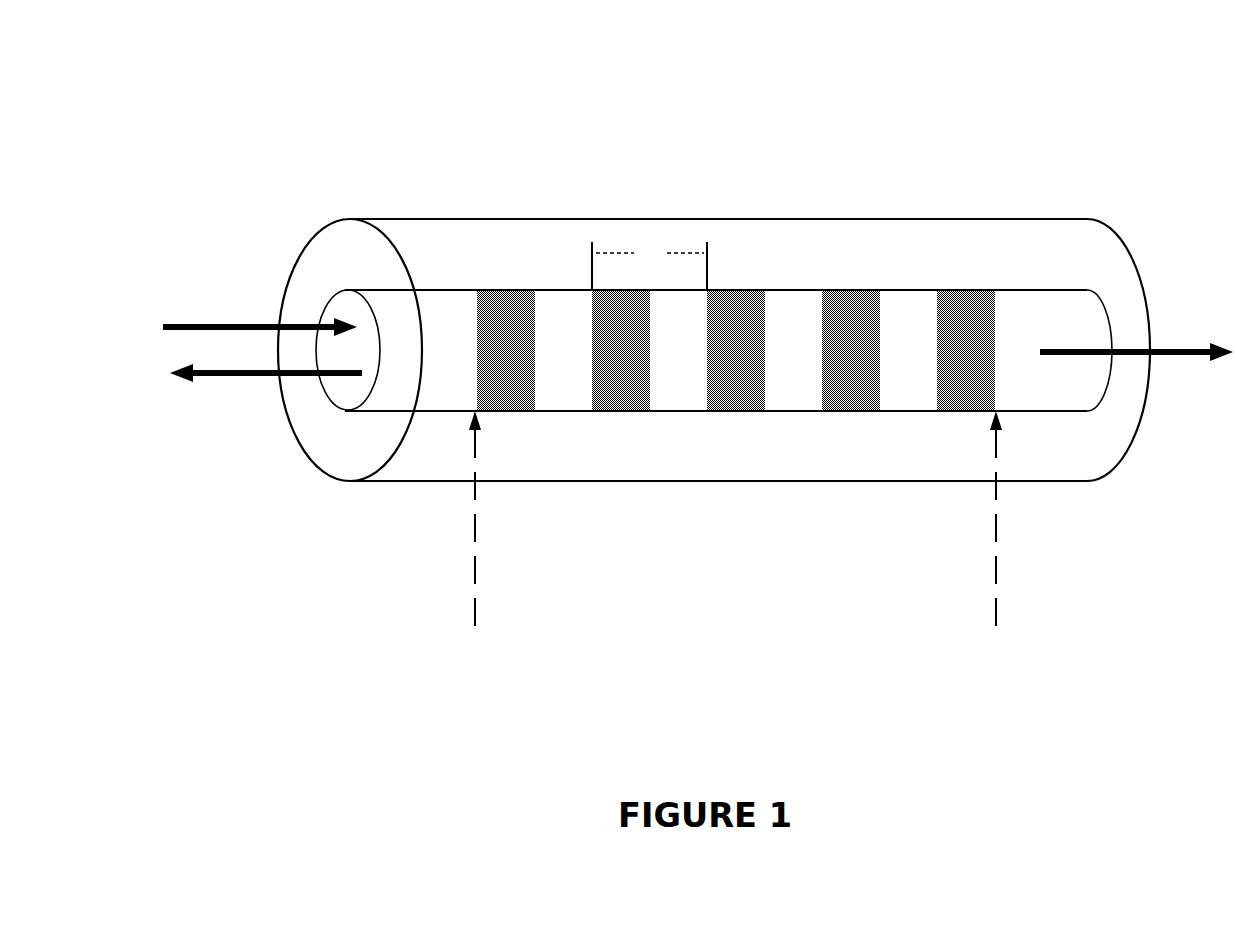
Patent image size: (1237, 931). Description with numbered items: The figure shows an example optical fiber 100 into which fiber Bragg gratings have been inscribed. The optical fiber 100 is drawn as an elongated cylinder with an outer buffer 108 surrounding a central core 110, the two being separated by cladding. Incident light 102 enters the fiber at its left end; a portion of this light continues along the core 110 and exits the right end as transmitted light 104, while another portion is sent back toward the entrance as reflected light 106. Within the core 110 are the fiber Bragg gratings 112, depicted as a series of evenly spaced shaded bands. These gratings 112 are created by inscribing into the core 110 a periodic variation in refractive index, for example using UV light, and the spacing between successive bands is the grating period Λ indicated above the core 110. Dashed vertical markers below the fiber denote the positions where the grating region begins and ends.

The optical fiber 100 is at (392, 137).
The incident light 102 is at (260, 318).
The transmitted light 104 is at (1172, 343).
The reflected light 106 is at (260, 378).
The buffer 108 is at (675, 218).
The core 110 is at (815, 412).
The fiber Bragg gratings 112 is at (850, 295).